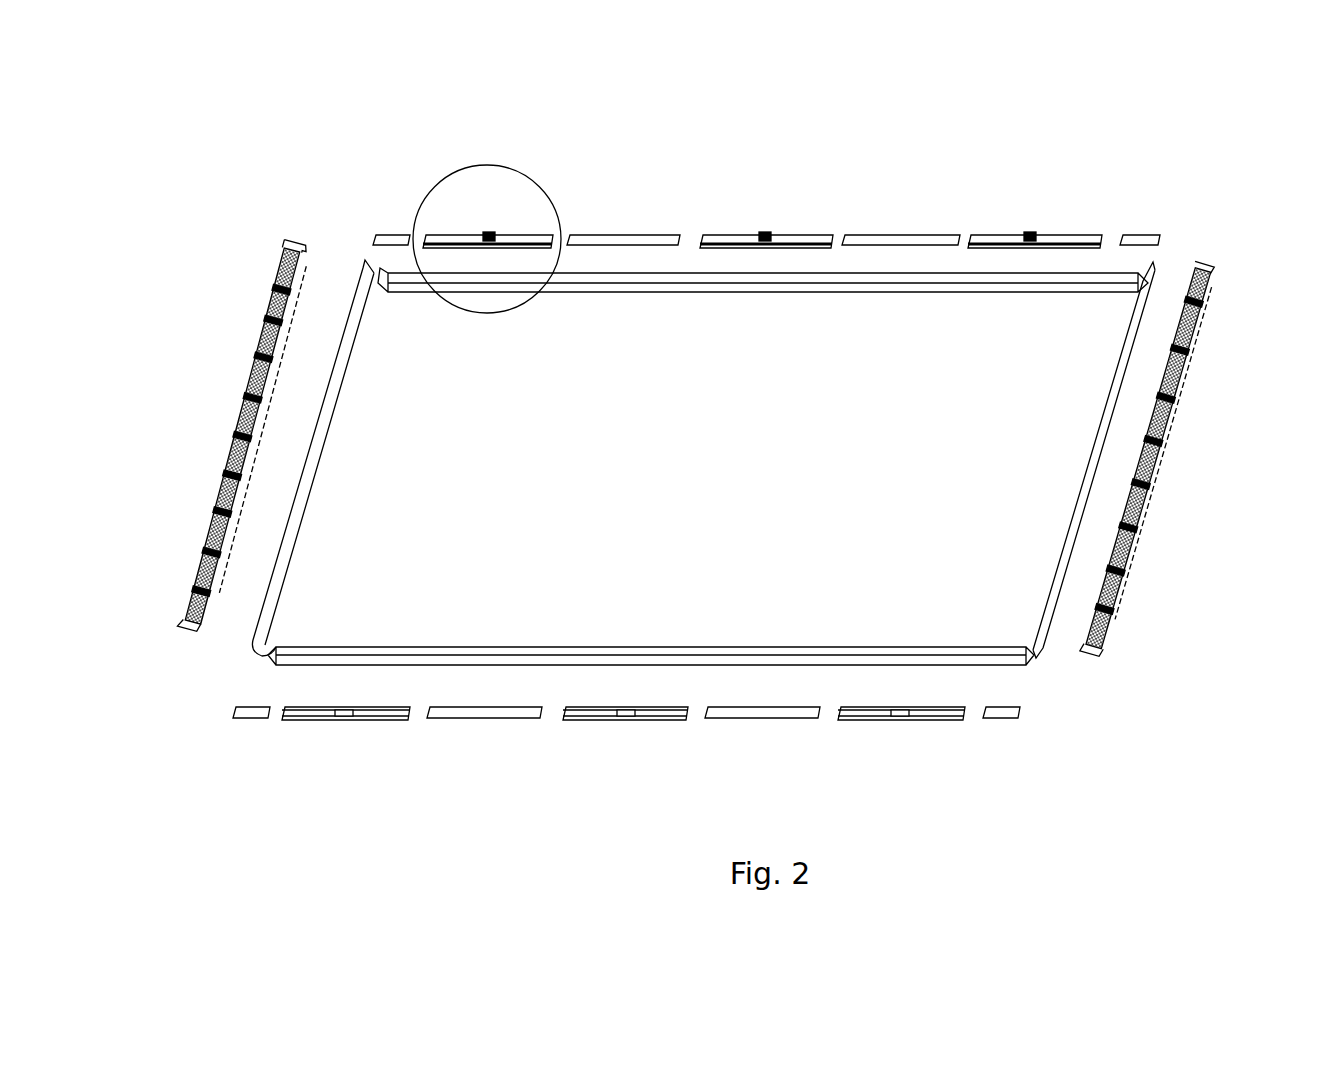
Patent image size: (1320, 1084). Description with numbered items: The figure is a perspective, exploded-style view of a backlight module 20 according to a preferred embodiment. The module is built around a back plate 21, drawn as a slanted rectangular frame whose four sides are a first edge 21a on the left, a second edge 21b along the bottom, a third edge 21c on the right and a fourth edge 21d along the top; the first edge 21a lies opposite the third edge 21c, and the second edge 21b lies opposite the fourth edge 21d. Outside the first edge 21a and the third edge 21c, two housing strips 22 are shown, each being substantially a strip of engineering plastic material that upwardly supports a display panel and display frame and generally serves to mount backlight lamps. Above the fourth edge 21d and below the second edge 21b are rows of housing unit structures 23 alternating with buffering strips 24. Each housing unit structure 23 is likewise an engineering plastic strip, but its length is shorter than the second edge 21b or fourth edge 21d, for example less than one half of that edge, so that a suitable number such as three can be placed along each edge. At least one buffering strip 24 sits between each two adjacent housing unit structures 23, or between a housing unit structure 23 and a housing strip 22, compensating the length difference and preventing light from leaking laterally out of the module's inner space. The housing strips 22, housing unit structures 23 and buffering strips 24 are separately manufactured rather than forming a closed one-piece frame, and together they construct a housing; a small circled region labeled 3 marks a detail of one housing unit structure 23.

The backlight module 20 is at (1067, 183).
The detail region of FIG. 3 is at (430, 185).
The back plate 21 is at (1025, 623).
The first edge 21a is at (258, 628).
The second edge 21b is at (590, 662).
The third edge 21c is at (1110, 437).
The fourth edge 21d is at (662, 273).
The housing strip 22 is at (262, 342).
The housing unit structure 23 is at (510, 233).
The buffering strip 24 is at (898, 238).